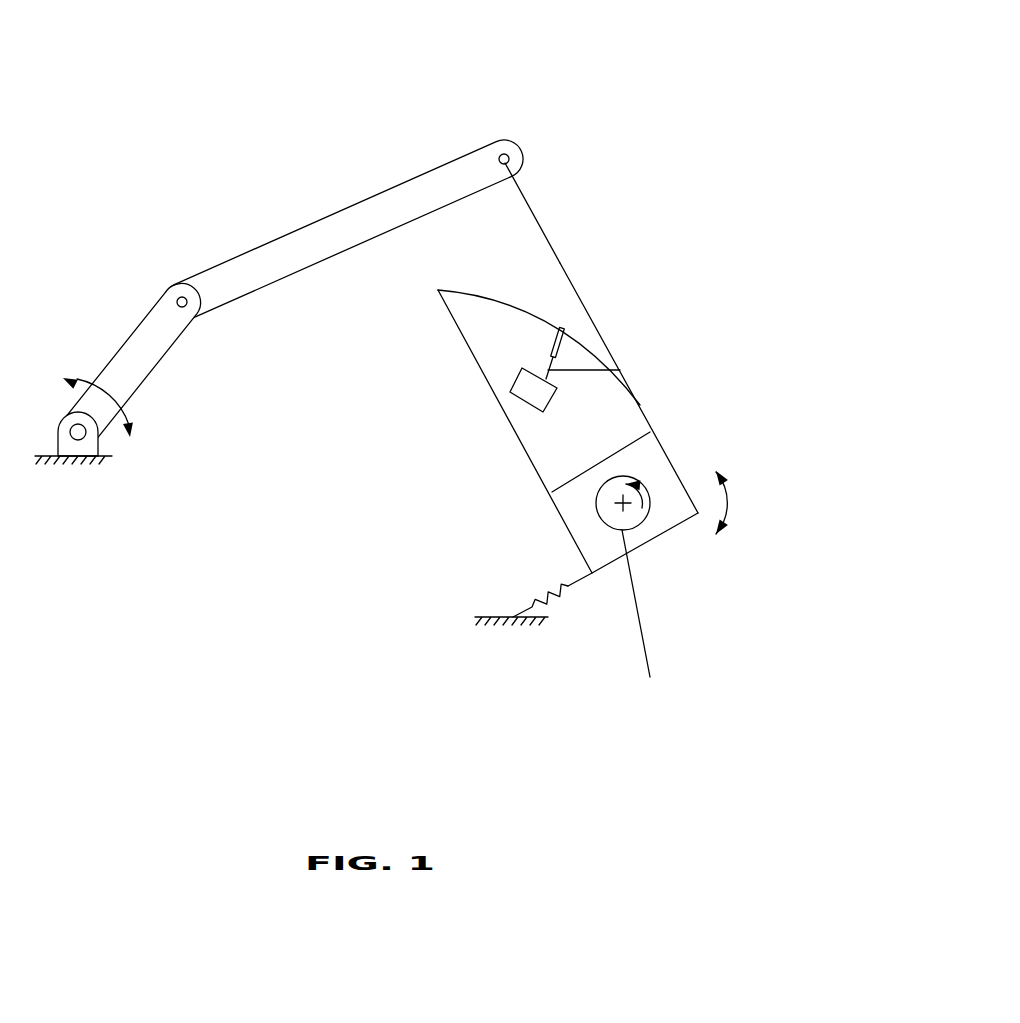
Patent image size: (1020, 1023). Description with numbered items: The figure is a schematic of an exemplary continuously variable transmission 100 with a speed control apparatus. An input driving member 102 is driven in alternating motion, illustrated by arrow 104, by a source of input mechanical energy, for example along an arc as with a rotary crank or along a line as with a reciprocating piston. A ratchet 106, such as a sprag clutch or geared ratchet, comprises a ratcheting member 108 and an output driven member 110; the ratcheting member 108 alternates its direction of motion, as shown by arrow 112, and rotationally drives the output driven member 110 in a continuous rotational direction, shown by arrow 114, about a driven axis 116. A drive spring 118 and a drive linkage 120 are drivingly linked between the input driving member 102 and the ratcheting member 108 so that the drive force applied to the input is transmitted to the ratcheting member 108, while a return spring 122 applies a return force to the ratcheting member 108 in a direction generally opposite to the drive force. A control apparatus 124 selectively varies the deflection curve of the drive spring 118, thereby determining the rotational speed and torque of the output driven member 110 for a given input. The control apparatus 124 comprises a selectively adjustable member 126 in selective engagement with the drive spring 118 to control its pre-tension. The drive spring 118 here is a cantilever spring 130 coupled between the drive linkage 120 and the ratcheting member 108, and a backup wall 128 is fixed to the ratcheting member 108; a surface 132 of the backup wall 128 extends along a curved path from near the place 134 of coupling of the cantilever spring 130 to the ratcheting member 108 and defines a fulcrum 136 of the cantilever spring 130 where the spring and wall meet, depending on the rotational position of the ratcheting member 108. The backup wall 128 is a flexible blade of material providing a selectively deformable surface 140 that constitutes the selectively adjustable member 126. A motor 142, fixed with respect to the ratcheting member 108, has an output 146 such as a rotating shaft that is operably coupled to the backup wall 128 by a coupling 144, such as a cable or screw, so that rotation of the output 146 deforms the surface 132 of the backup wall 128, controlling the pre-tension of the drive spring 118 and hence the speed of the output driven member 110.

The continuously variable transmission 100 is at (551, 56).
The input driving member 102 is at (132, 328).
The arrow of alternating motion 104 is at (127, 415).
The ratchet 106 is at (595, 399).
The ratcheting member 108 is at (556, 509).
The output driven member 110 is at (650, 677).
The arrow of alternating directions 112 is at (728, 504).
The arrow of continuous rotational direction 114 is at (646, 485).
The driven axis 116 is at (620, 505).
The drive spring 118 is at (590, 283).
The drive linkage 120 is at (334, 213).
The return spring 122 is at (566, 594).
The control apparatus 124 is at (484, 403).
The selectively adjustable member 126 is at (413, 331).
The backup wall 128 is at (591, 336).
The cantilever spring 130 is at (542, 228).
The surface of the backup wall 132 is at (513, 292).
The place of coupling 134 is at (664, 424).
The fulcrum 136 is at (650, 398).
The selectively deformable surface 140 is at (551, 305).
The motor 142 is at (535, 408).
The coupling 144 is at (536, 343).
The output of the motor 146 is at (620, 370).